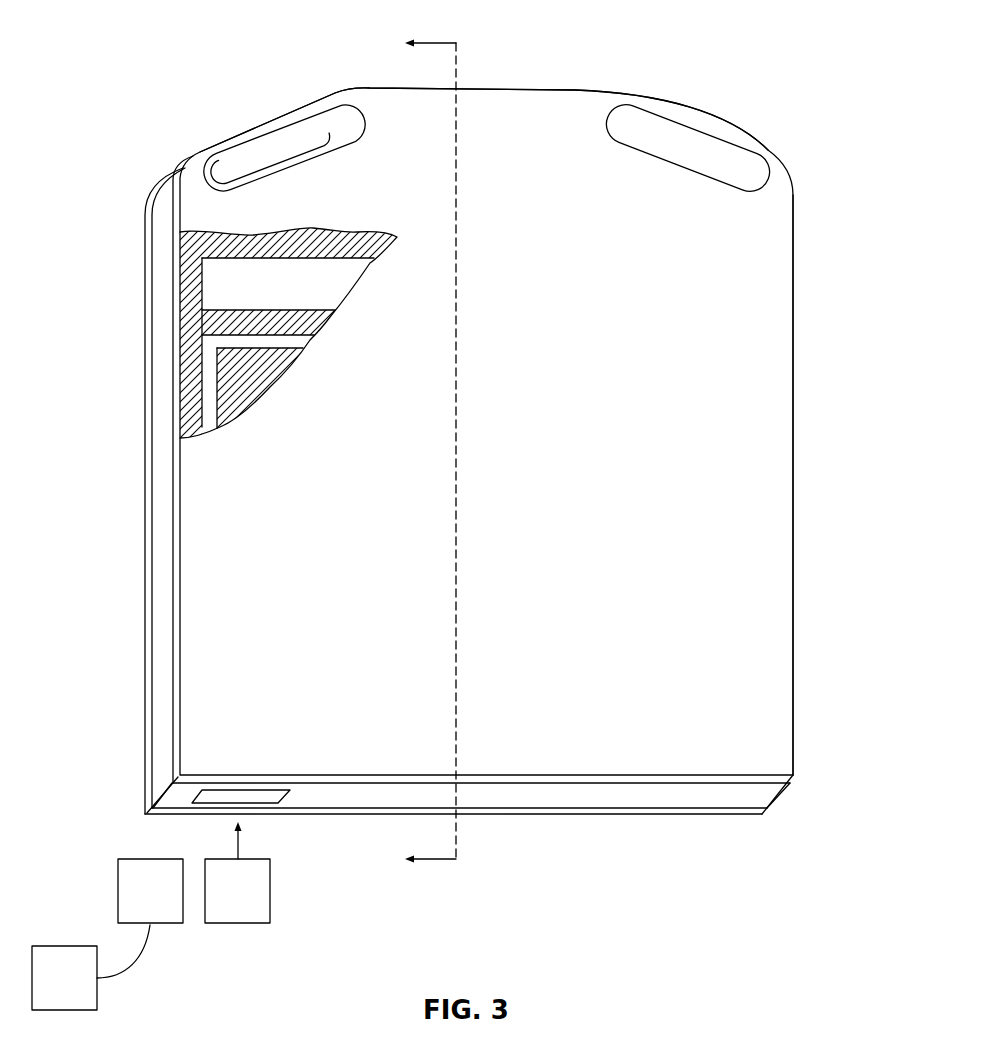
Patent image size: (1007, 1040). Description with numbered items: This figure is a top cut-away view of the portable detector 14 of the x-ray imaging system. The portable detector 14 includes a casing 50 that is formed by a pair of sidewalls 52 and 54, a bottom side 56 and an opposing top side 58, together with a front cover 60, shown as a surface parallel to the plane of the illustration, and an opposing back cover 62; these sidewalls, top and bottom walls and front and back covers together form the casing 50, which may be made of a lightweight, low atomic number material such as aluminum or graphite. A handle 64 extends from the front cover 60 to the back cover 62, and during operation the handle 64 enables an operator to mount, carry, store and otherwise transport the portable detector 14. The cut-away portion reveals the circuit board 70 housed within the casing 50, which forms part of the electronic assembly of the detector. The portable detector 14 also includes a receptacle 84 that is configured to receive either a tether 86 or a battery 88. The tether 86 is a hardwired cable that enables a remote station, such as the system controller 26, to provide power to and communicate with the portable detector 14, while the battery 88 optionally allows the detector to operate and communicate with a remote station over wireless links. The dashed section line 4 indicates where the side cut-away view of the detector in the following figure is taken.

The portable detector 14 is at (203, 68).
The casing 50 is at (584, 117).
The sidewall 52 is at (164, 528).
The sidewall 54 is at (800, 660).
The bottom side 56 is at (638, 795).
The top side 58 is at (506, 90).
The front cover 60 is at (722, 780).
The back cover 62 is at (553, 813).
The handle 64 is at (685, 141).
The circuit board 70 is at (214, 364).
The receptacle 84 is at (263, 797).
The tether 86 is at (150, 891).
The battery 88 is at (237, 872).
The system controller 26 is at (91, 967).
The section line 4- 4 is at (420, 451).